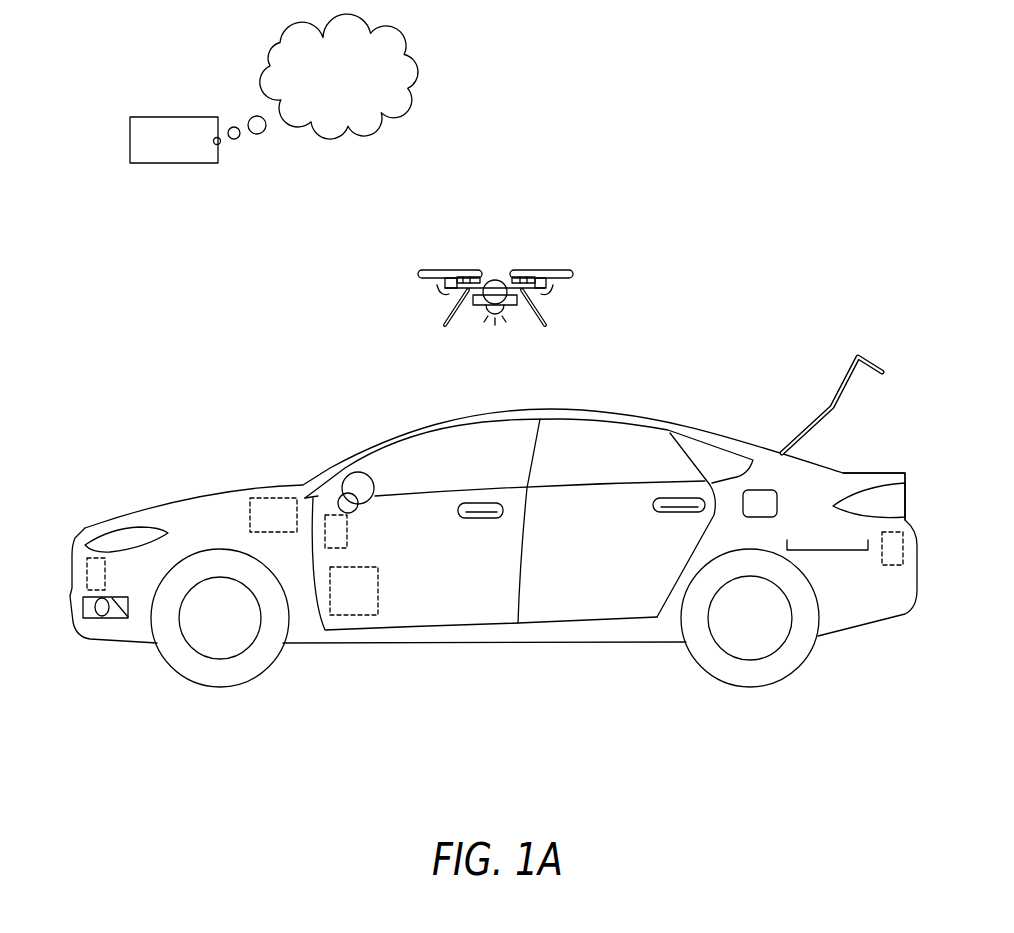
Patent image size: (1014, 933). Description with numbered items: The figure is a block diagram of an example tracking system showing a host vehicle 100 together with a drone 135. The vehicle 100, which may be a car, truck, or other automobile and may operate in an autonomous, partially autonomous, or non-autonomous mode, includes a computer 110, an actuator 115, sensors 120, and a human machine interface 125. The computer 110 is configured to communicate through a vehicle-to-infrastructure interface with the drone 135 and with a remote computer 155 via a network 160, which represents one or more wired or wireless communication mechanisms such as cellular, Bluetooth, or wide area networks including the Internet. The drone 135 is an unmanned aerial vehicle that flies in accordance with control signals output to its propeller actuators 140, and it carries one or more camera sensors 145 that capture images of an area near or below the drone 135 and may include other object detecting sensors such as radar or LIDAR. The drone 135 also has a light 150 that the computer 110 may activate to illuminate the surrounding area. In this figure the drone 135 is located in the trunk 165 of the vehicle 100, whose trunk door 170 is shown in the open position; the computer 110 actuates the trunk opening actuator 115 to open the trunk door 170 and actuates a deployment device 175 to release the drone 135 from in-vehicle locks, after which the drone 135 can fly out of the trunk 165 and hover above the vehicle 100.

The vehicle 100 is at (621, 406).
The computer 110 is at (258, 497).
The actuator 115 is at (363, 615).
The sensor 120 is at (86, 563).
The human machine interface 125 is at (322, 496).
The drone 135 is at (494, 281).
The propeller actuator 140 is at (430, 255).
The camera sensor 145 is at (440, 297).
The light 150 is at (487, 318).
The remote computer 155 is at (174, 140).
The network 160 is at (316, 79).
The trunk 165 is at (856, 458).
The trunk door 170 is at (868, 357).
The deployment device 175 is at (835, 550).